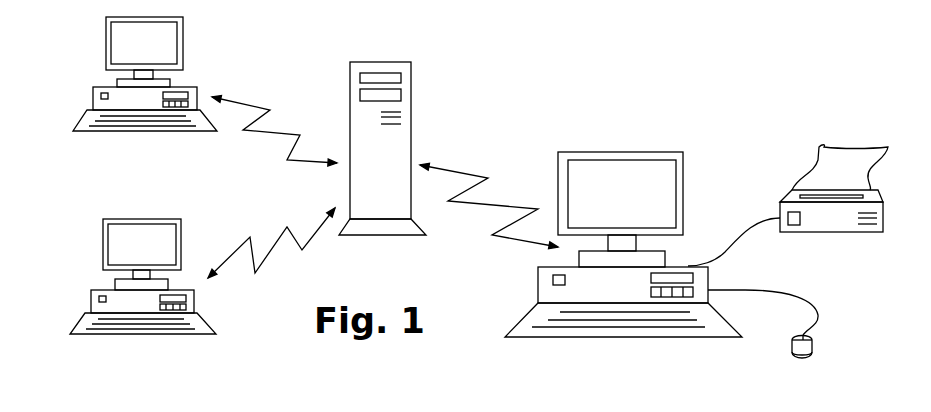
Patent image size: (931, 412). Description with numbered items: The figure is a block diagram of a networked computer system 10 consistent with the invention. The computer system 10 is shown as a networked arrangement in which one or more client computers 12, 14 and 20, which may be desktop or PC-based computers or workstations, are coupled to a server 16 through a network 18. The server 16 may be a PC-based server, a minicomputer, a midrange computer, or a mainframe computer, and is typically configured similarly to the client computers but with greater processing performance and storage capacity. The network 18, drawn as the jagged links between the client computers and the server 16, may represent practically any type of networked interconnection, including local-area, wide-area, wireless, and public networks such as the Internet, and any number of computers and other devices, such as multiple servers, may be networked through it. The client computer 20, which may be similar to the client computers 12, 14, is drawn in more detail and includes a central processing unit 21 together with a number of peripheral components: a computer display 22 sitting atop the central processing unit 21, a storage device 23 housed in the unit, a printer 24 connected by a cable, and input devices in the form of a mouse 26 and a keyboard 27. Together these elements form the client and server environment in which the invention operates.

The computer system 10 is at (543, 68).
The client computer 12 is at (106, 35).
The client computer 14 is at (104, 222).
The server 16 is at (366, 62).
The network 18 is at (282, 137).
The client computer 20 is at (598, 241).
The central processing unit 21 is at (548, 292).
The computer display 22 is at (595, 155).
The storage device 23 is at (670, 297).
The printer 24 is at (795, 198).
The mouse 26 is at (808, 350).
The keyboard 27 is at (526, 332).